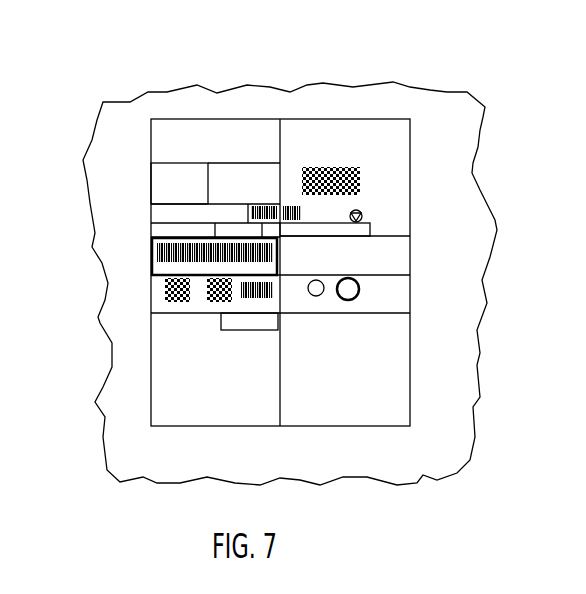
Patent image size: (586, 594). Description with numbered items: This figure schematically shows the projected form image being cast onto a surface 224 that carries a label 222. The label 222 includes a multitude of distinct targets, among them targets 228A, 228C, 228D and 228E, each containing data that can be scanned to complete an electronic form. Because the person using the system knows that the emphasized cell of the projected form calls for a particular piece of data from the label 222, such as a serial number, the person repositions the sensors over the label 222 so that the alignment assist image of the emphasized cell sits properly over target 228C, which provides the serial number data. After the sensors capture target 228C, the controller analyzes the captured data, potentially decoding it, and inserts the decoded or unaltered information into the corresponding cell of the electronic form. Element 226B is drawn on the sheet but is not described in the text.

The label 222 is at (362, 183).
The surface 224 is at (423, 105).
The shipping label 226B is at (152, 210).
The target 228A is at (173, 177).
The target 228C is at (157, 254).
The target 228D is at (174, 296).
The target 228E is at (223, 297).